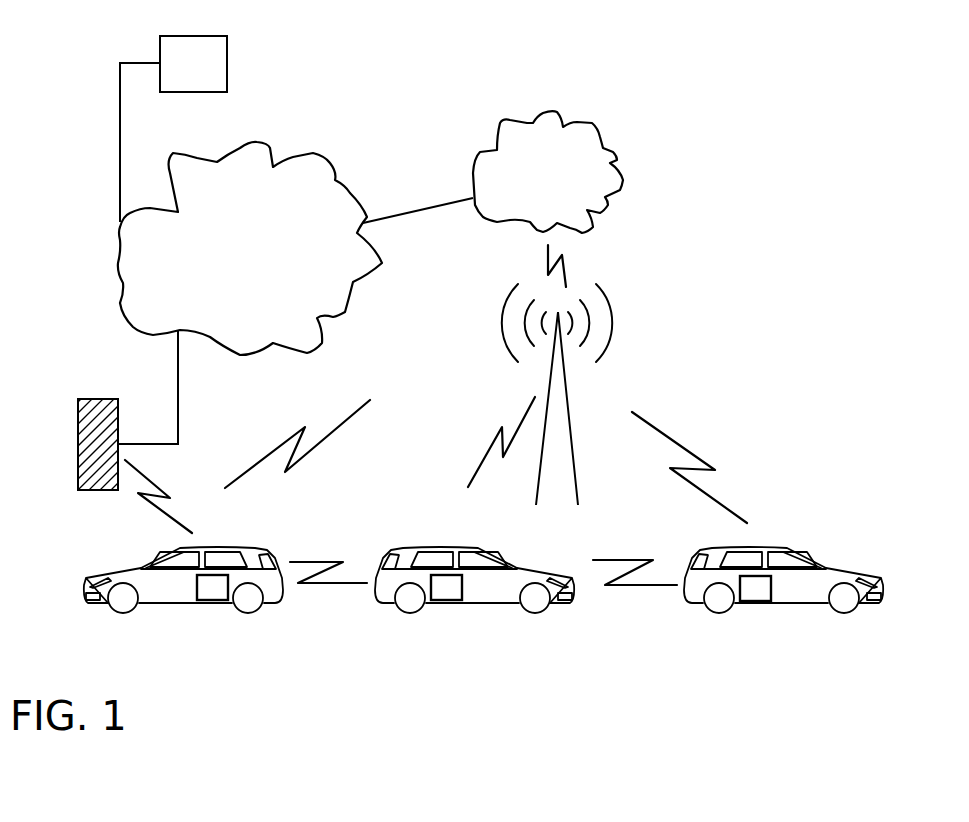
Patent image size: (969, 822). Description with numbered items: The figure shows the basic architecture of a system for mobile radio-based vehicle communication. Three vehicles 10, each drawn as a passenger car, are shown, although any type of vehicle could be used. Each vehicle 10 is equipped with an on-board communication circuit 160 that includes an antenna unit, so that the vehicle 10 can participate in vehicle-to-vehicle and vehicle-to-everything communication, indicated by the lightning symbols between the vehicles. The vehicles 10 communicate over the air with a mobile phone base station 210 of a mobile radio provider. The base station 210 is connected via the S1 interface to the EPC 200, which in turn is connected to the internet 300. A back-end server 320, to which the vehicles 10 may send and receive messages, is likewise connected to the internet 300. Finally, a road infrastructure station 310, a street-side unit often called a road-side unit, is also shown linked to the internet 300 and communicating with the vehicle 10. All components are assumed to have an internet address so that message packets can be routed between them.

The vehicle 10 is at (153, 587).
The on-board communication circuit 160 is at (212, 587).
The EPC 200 is at (582, 132).
The mobile phone base station 210 is at (568, 415).
The internet 300 is at (324, 158).
The road infrastructure station 310 is at (92, 399).
The back-end server 320 is at (225, 63).